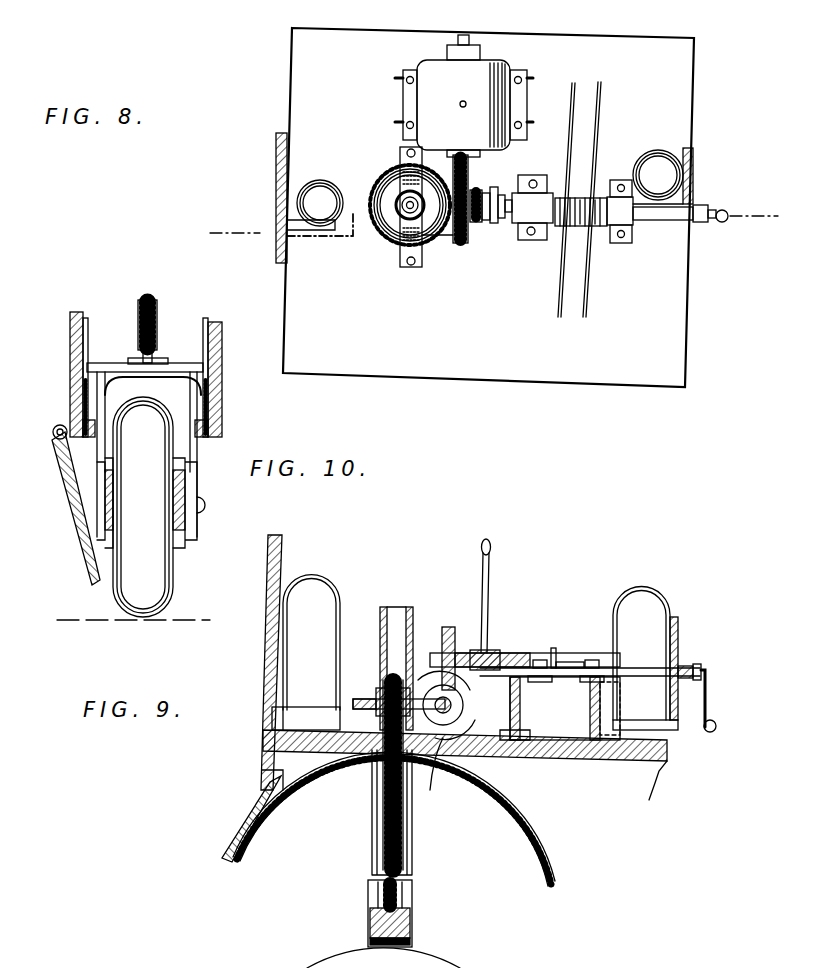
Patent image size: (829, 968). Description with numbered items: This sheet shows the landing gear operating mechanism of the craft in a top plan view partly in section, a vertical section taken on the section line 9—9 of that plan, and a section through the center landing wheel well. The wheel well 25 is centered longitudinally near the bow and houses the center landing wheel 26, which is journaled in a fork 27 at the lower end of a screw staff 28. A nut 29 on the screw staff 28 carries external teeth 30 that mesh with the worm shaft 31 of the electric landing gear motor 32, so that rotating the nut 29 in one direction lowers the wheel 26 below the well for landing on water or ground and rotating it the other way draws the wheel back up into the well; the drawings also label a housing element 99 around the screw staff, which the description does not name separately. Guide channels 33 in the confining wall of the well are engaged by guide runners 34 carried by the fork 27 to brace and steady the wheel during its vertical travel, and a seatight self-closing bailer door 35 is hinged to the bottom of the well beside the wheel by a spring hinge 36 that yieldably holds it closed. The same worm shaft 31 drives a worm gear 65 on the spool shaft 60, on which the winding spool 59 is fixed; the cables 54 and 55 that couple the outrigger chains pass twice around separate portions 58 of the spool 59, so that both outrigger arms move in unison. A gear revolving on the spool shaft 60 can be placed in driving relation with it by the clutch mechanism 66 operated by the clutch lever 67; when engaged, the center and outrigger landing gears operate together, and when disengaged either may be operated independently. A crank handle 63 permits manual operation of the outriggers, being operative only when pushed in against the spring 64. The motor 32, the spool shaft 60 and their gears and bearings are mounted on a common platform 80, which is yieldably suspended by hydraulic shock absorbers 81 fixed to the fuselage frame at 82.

In FIG. 8, the section line 9— 9 is at (493, 229).
In FIG. 10, the wheel well 25 is at (72, 352).
In FIG. 9, the wheel well 25 is at (228, 858).
In FIG. 10, the center landing wheel 26 is at (123, 597).
In FIG. 9, the center landing wheel 26 is at (335, 962).
In FIG. 10, the fork 27 is at (92, 455).
In FIG. 9, the fork 27 is at (413, 925).
In FIG. 8, the screw staff 28 is at (412, 237).
In FIG. 10, the screw staff 28 is at (152, 309).
In FIG. 9, the screw staff 28 is at (414, 775).
In FIG. 9, the nut 29 is at (385, 692).
In FIG. 8, the external teeth 30 is at (399, 173).
In FIG. 9, the external teeth 30 is at (370, 712).
In FIG. 8, the worm shaft 31 is at (470, 167).
In FIG. 9, the worm shaft 31 is at (432, 765).
In FIG. 8, the landing gear motor 32 is at (464, 96).
In FIG. 9, the landing gear motor 32 is at (420, 667).
In FIG. 10, the guide channels 33 is at (82, 338).
In FIG. 9, the guide channels 33 is at (372, 830).
In FIG. 10, the guide runners 34 is at (63, 425).
In FIG. 10, the bailer door 35 is at (62, 495).
In FIG. 10, the spring hinge 36 is at (52, 432).
In FIG. 8, the cable 54 is at (572, 108).
In FIG. 9, the cable 54 is at (553, 649).
In FIG. 8, the cable 55 is at (598, 134).
In FIG. 8, the spool portions 58 is at (555, 232).
In FIG. 9, the spool portions 58 is at (542, 652).
In FIG. 8, the winding spool 59 is at (582, 198).
In FIG. 9, the winding spool 59 is at (567, 653).
In FIG. 8, the spool shaft 60 is at (677, 216).
In FIG. 9, the spool shaft 60 is at (556, 680).
In FIG. 8, the crank handle 63 is at (724, 223).
In FIG. 9, the crank handle 63 is at (706, 708).
In FIG. 8, the spring 64 is at (700, 206).
In FIG. 9, the spring 64 is at (695, 665).
In FIG. 8, the worm gear 65 is at (455, 244).
In FIG. 9, the worm gear 65 is at (450, 629).
In FIG. 8, the clutch mechanism 66 is at (492, 224).
In FIG. 9, the clutch mechanism 66 is at (494, 650).
In FIG. 8, the clutch lever 67 is at (478, 224).
In FIG. 9, the clutch lever 67 is at (489, 575).
In FIG. 8, the platform 80 is at (524, 378).
In FIG. 9, the platform 80 is at (640, 765).
In FIG. 8, the hydraulic shock absorber 81 is at (306, 203).
In FIG. 9, the hydraulic shock absorber 81 is at (315, 592).
In FIG. 8, the fuselage frame fixing 82 is at (278, 150).
In FIG. 9, the fuselage frame fixing 82 is at (268, 640).
In FIG. 8, the rack housing 99 is at (395, 193).
In FIG. 9, the rack housing 99 is at (395, 618).